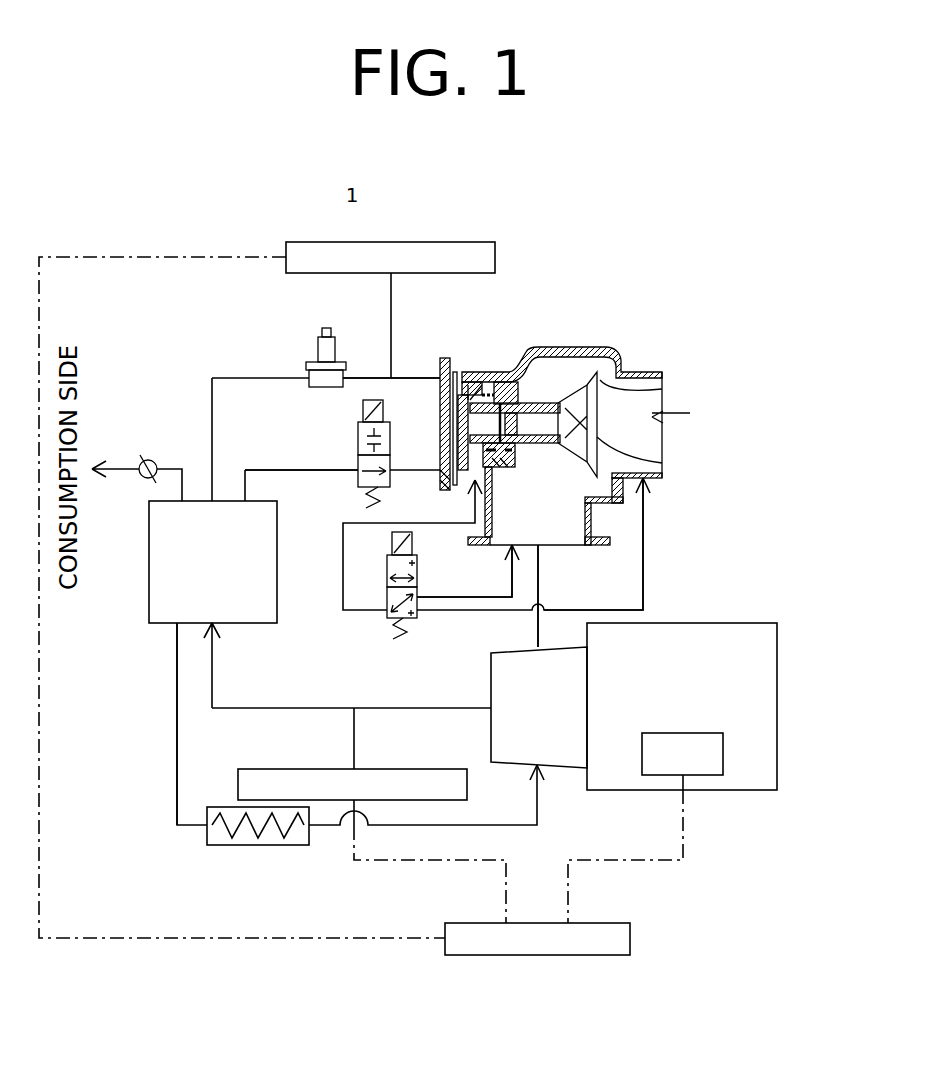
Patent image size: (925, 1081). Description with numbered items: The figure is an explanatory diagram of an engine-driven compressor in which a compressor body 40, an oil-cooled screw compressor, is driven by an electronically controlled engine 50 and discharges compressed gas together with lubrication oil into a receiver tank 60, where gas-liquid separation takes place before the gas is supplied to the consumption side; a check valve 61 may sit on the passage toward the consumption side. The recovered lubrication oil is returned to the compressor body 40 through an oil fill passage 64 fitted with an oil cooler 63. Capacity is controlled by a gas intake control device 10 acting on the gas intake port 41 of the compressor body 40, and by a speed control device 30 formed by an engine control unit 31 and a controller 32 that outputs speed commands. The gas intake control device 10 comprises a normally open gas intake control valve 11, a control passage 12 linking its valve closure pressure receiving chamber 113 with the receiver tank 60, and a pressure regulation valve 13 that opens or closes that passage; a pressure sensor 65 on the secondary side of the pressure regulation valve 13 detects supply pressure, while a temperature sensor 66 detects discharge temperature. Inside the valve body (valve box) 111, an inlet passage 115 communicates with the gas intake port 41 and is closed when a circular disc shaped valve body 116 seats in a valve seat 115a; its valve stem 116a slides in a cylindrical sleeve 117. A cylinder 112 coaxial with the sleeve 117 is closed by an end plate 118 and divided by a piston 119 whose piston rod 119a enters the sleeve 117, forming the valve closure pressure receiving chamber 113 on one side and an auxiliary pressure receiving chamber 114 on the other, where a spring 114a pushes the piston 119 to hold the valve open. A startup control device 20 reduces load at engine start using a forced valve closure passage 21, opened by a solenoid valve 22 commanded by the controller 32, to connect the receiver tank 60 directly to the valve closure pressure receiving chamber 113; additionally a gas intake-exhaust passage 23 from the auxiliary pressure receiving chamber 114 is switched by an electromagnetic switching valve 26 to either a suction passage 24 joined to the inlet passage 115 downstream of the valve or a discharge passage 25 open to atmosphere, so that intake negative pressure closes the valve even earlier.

The pressure sensor 65 is at (437, 242).
The gas intake control device 10 is at (395, 308).
The pressure regulation valve 13 is at (338, 353).
The control passage 12 is at (405, 377).
The gas intake control valve 11 is at (560, 416).
The body (valve box) 111 is at (590, 347).
The cylinder 112 is at (468, 392).
The valve closure pressure receiving chamber 113 is at (447, 475).
The auxiliary pressure receiving chamber 114 is at (495, 482).
The spring 114a is at (505, 465).
The inlet passage 115 is at (691, 411).
The valve seat 115a is at (662, 388).
The valve body 116 is at (660, 447).
The valve stem 116a is at (660, 462).
The sleeve 117 is at (537, 420).
The end plate 118 is at (440, 432).
The piston 119 is at (463, 463).
The piston rod 119a is at (482, 380).
The startup control device 20 is at (333, 420).
The forced valve closure passage 21 is at (293, 469).
The solenoid valve 22 is at (358, 457).
The check valve 61 is at (157, 463).
The receiver tank 60 is at (160, 620).
The gas intake-exhaust passage 23 is at (343, 578).
The suction passage 24 is at (460, 597).
The discharge passage 25 is at (648, 571).
The electromagnetic switching valve 26 is at (386, 619).
The gas intake port 41 is at (538, 645).
The compressor body 40 is at (492, 733).
The engine 50 is at (770, 715).
The speed control device 30 is at (780, 832).
The engine control unit (ECU) 31 is at (708, 775).
The controller 32 is at (622, 938).
The temperature sensor 66 is at (391, 769).
The oil fill passage 64 is at (177, 770).
The oil cooler 63 is at (247, 845).